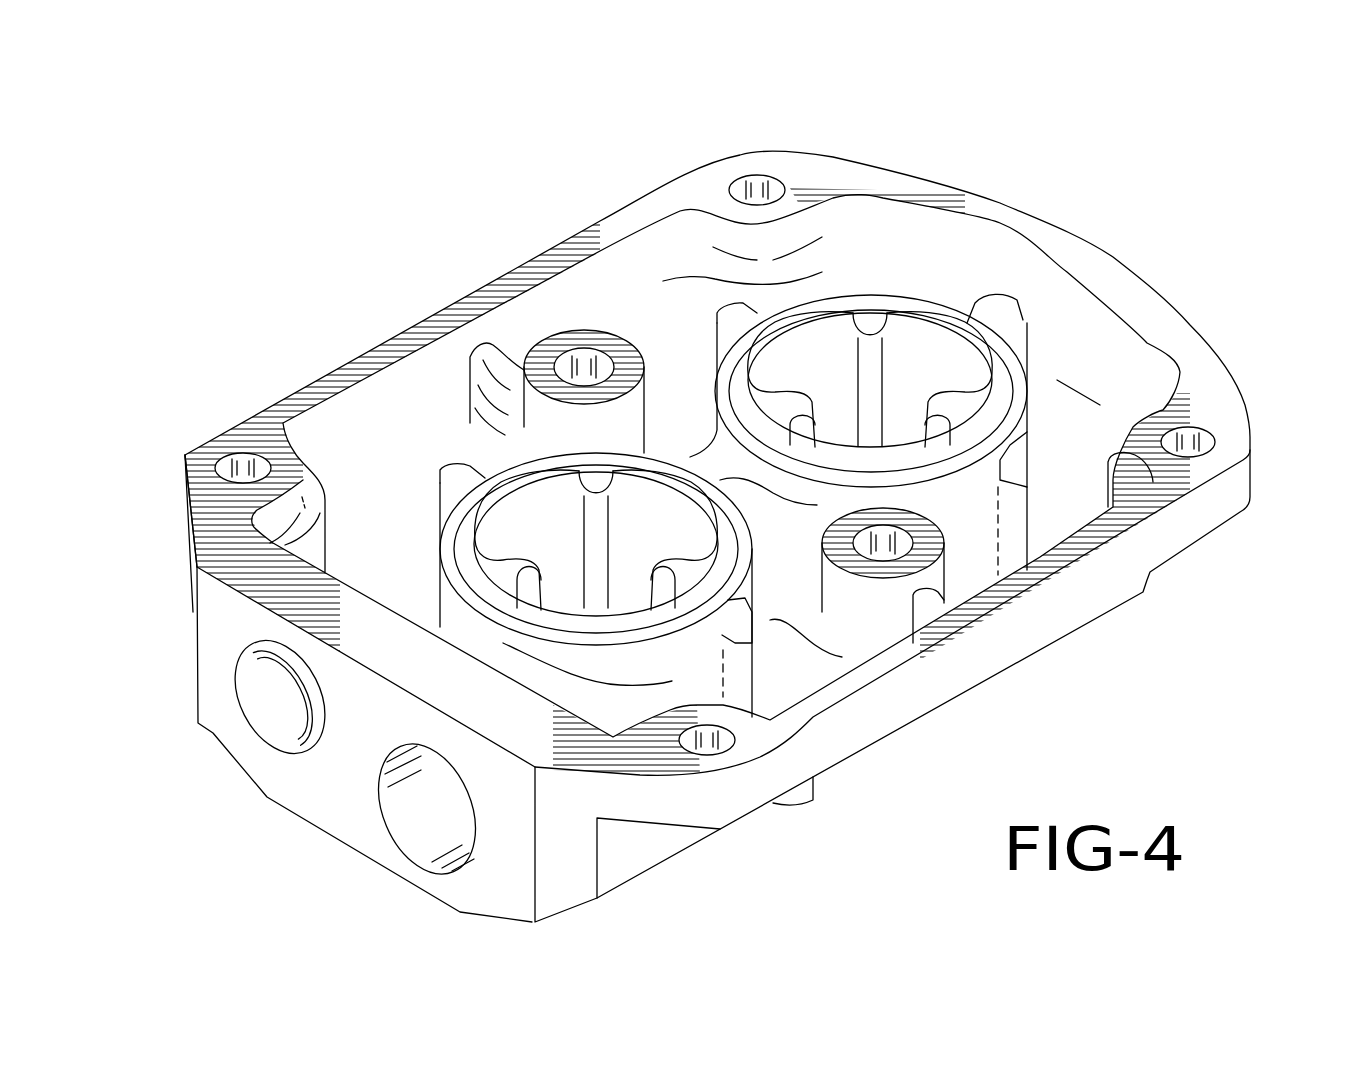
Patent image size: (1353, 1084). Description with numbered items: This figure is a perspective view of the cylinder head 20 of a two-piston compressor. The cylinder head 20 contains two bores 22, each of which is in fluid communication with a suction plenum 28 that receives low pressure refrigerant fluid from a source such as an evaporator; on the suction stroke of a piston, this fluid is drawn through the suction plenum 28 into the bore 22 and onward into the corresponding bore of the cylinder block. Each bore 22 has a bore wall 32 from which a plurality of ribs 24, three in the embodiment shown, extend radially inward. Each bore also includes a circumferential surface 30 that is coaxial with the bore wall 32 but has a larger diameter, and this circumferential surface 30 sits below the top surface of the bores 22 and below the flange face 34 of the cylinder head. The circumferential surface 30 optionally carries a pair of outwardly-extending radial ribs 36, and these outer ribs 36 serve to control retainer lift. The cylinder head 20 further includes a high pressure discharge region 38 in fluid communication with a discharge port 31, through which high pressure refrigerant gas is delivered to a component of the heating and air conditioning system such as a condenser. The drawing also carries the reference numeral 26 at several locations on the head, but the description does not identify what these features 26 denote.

The cylinder head 20 is at (1040, 214).
The bore 22 is at (935, 365).
The rib 24 is at (870, 322).
The mounting hole 26 is at (757, 197).
The suction plenum 28 is at (425, 813).
The circumferential surface 30 is at (733, 460).
The discharge port 31 is at (277, 698).
The bore wall 32 is at (490, 530).
The flange face 34 is at (217, 527).
The outwardly-extending radial rib 36 is at (1005, 470).
The high pressure discharge region 38 is at (397, 476).